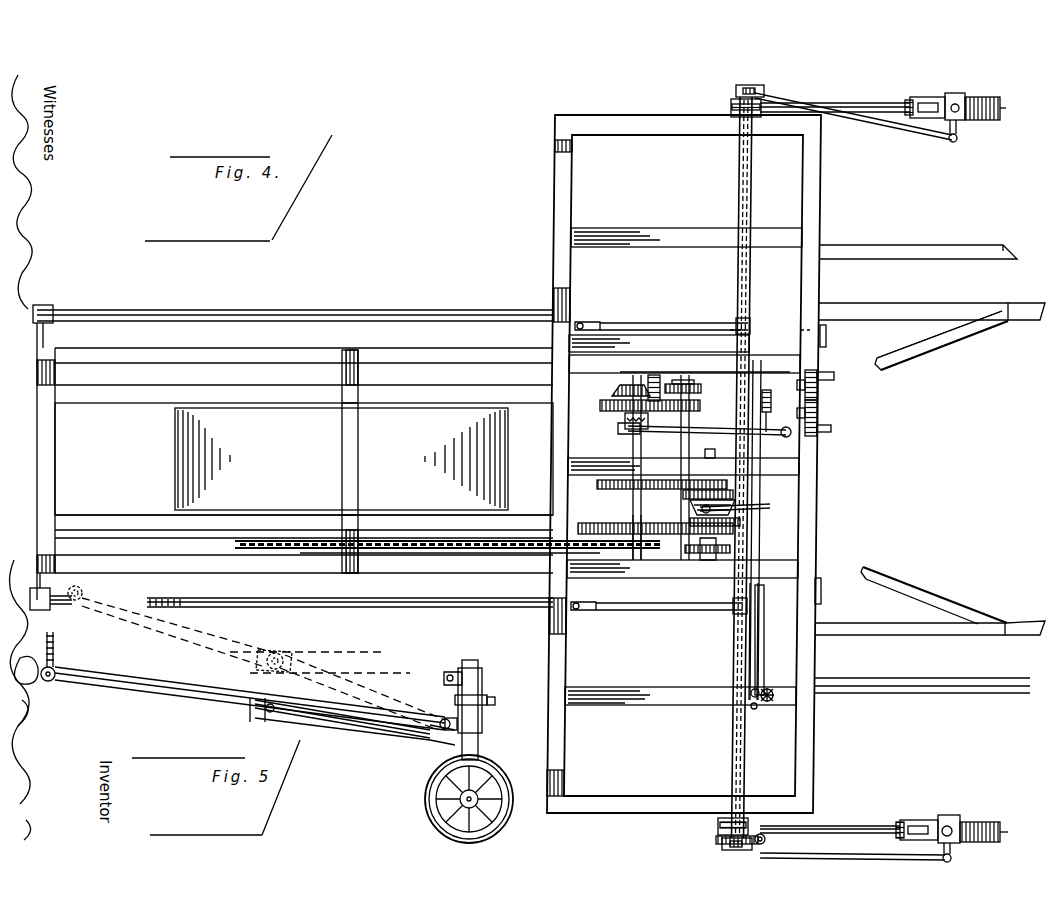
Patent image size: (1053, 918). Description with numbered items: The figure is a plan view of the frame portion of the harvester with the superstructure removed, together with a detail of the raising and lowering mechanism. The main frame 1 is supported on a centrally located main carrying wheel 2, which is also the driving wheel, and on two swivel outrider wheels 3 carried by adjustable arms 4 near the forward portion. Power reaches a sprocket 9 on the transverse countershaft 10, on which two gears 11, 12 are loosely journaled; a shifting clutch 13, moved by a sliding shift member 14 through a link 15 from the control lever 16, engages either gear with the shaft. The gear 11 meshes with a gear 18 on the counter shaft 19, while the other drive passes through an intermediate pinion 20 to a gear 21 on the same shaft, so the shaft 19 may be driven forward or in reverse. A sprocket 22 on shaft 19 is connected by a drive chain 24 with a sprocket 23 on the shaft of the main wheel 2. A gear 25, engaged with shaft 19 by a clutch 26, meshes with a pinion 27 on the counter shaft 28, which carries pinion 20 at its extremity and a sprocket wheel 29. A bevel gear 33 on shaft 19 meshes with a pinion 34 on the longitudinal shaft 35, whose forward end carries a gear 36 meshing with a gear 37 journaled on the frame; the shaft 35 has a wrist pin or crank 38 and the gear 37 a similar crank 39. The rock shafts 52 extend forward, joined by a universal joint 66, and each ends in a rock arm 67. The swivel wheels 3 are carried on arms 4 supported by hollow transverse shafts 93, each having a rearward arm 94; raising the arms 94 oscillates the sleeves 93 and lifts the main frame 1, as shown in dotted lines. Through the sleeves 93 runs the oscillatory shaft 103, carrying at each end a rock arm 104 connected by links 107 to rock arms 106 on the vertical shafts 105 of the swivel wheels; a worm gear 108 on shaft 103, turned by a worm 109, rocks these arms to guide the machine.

In FIG. 4, the main frame 1 is at (120, 392).
In FIG. 5, the main frame 1 is at (335, 700).
In FIG. 4, the main carrying wheel 2 is at (341, 459).
In FIG. 4, the swivel outrider wheels 3 is at (994, 120).
In FIG. 5, the swivel outrider wheels 3 is at (500, 762).
In FIG. 4, the adjustable arms 4 is at (878, 99).
In FIG. 5, the adjustable arms 4 is at (350, 725).
In FIG. 4, the sprocket 9 is at (697, 549).
In FIG. 4, the transverse countershaft 10 is at (728, 450).
In FIG. 4, the gear 11 is at (742, 532).
In FIG. 4, the gear 12 is at (733, 492).
In FIG. 4, the shifting clutch 13 is at (692, 506).
In FIG. 4, the sliding shift member 14 is at (740, 511).
In FIG. 4, the link 15 is at (763, 640).
In FIG. 4, the control lever 16 is at (772, 690).
In FIG. 4, the gear 18 is at (606, 524).
In FIG. 4, the counter shaft 19 is at (635, 518).
In FIG. 4, the intermediate pinion 20 is at (670, 478).
In FIG. 4, the gear 21 is at (605, 480).
In FIG. 4, the sprocket 22 is at (650, 604).
In FIG. 4, the sprocket 23 is at (272, 538).
In FIG. 4, the drive chain 24 is at (440, 555).
In FIG. 4, the gear 25 is at (605, 402).
In FIG. 4, the clutch 26 is at (624, 421).
In FIG. 4, the pinion 27 is at (704, 416).
In FIG. 4, the counter shaft 28 is at (702, 445).
In FIG. 4, the sprocket wheel 29 is at (706, 384).
In FIG. 4, the bevel gear 33 is at (630, 392).
In FIG. 4, the pinion 34 is at (657, 378).
In FIG. 4, the longitudinal shaft 35 is at (765, 382).
In FIG. 4, the gear 36 is at (820, 385).
In FIG. 4, the gear 37 is at (818, 420).
In FIG. 4, the wrist pin or crank 38 is at (832, 372).
In FIG. 4, the wrist pin or crank 39 is at (828, 432).
In FIG. 4, the rock shafts 52 is at (448, 615).
In FIG. 4, the universal joint 66 is at (592, 322).
In FIG. 4, the rock arm 67 is at (828, 336).
In FIG. 4, the hollow transverse shafts 93 is at (753, 196).
In FIG. 4, the rearward extending arm 94 is at (658, 323).
In FIG. 5, the rearward extending arm 94 is at (229, 681).
In FIG. 4, the oscillatory shaft 103 is at (728, 170).
In FIG. 4, the rock arm 104 is at (738, 90).
In FIG. 4, the vertical shaft 105 is at (975, 125).
In FIG. 4, the rock arm 106 is at (951, 143).
In FIG. 4, the links 107 is at (883, 130).
In FIG. 4, the worm gear 108 is at (708, 829).
In FIG. 4, the worm 109 is at (757, 843).